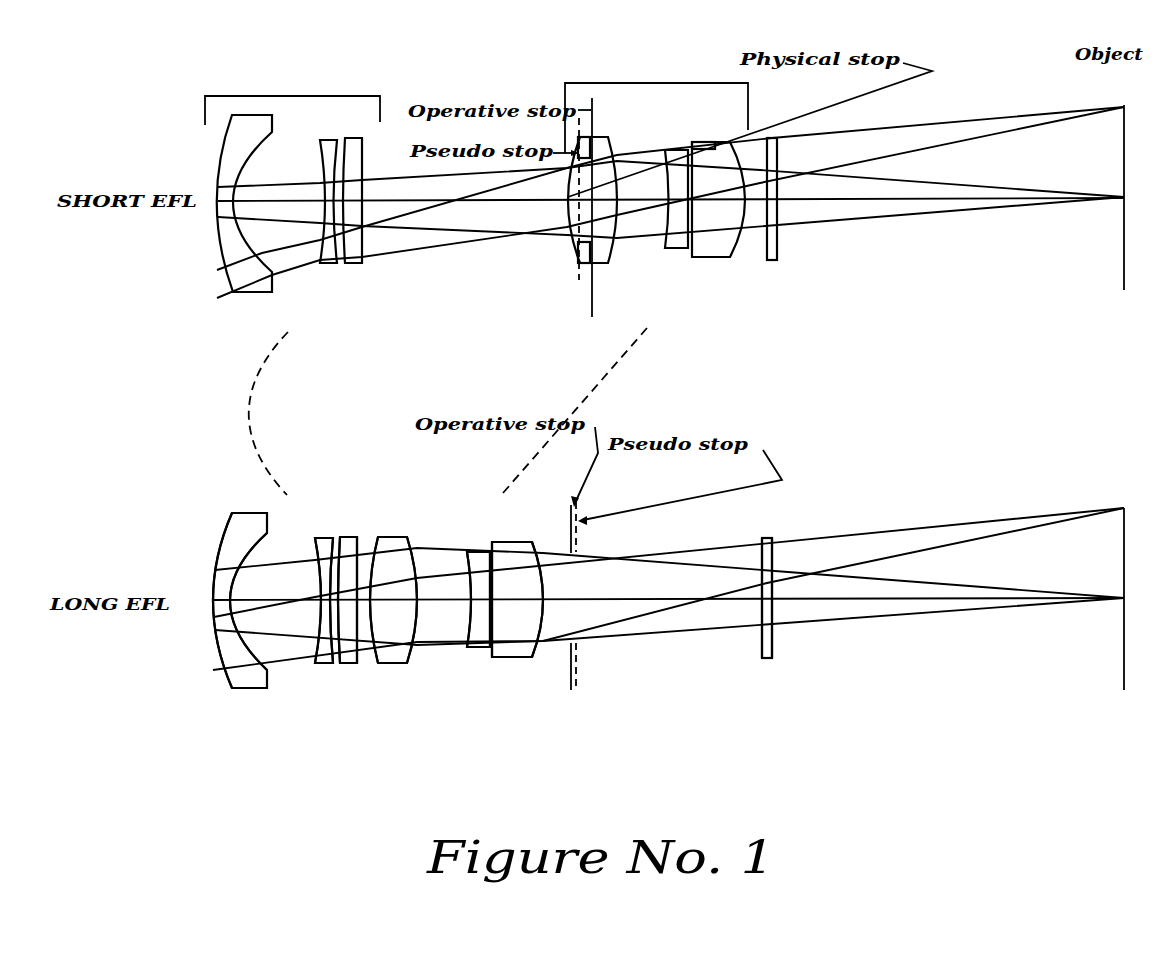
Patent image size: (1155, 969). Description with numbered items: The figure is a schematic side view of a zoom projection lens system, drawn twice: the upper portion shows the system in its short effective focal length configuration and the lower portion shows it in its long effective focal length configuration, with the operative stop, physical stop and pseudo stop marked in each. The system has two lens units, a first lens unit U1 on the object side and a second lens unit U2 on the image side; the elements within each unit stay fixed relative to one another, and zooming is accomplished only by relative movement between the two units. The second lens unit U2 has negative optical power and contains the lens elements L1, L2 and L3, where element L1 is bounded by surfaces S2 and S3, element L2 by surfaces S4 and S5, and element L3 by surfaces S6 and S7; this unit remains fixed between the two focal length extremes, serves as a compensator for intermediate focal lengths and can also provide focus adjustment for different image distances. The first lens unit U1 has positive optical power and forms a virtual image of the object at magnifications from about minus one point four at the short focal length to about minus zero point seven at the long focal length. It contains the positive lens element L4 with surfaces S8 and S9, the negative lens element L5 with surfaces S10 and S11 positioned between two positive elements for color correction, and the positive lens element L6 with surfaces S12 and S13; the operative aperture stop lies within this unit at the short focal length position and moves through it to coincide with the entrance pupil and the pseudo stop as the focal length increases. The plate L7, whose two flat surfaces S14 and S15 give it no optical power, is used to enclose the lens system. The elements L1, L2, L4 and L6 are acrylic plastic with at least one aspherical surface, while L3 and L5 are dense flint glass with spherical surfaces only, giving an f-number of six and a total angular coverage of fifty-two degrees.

The first lens unit U1 is at (656, 105).
The second lens unit U2 is at (292, 96).
The lens element L1 is at (221, 620).
The lens element L2 is at (314, 614).
The lens element L3 is at (379, 614).
The lens element L4 is at (438, 614).
The lens element L5 is at (527, 629).
The lens element L6 is at (590, 629).
The enclosing plate L7 is at (782, 605).
The lens surface S2 is at (225, 688).
The lens surface S3 is at (258, 673).
The lens surface S4 is at (312, 661).
The lens surface S5 is at (335, 663).
The lens surface S6 is at (357, 661).
The lens surface S7 is at (378, 661).
The lens surface S8 is at (407, 662).
The lens surface S9 is at (467, 647).
The lens surface S10 is at (473, 647).
The lens surface S11 is at (490, 628).
The lens surface S12 is at (503, 632).
The lens surface S13 is at (535, 652).
The flat surface S14 is at (760, 637).
The flat surface S15 is at (772, 637).